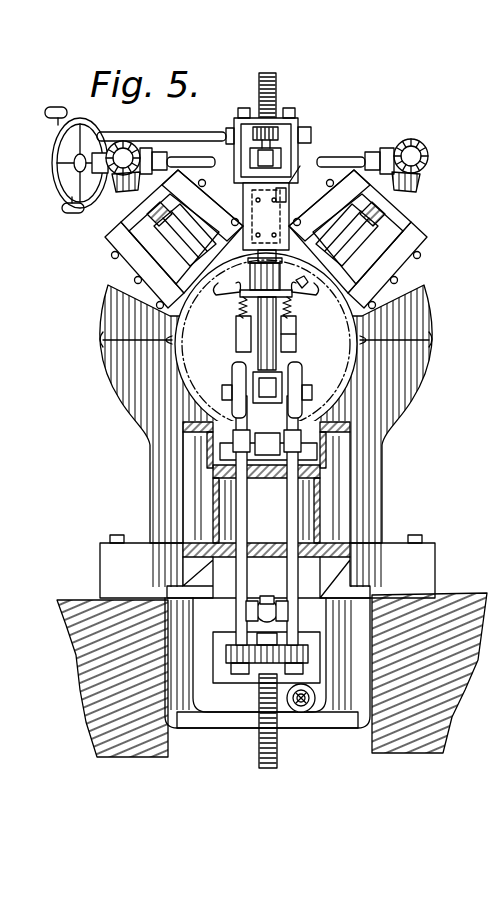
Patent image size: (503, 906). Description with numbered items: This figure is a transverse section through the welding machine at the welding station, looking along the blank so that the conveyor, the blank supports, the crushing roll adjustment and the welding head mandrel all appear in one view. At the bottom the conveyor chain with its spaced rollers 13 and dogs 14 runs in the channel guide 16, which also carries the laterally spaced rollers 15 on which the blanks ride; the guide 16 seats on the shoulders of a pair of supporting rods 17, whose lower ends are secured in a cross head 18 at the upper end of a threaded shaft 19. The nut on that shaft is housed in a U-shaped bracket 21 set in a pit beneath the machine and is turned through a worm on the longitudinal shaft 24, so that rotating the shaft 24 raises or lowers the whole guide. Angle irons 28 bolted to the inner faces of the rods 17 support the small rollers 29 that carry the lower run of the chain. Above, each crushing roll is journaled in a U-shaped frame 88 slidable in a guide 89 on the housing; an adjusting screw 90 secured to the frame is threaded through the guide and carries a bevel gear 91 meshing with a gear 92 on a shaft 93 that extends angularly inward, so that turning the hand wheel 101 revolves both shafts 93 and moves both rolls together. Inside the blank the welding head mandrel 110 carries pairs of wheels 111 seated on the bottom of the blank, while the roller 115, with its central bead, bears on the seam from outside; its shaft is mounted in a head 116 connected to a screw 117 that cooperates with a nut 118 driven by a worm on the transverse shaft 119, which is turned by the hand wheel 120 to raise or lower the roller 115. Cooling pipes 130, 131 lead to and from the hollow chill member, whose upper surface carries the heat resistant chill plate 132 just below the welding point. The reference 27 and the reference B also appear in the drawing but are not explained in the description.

The rollers 13 is at (267, 433).
The dogs 14 is at (282, 628).
The rollers 15 is at (348, 432).
The channel guide 16 is at (318, 450).
The supporting rods 17 is at (286, 524).
The cross head 18 is at (248, 602).
The threaded shaft 19 is at (268, 770).
The U-shaped bracket 21 is at (330, 722).
The shaft 24 is at (302, 714).
The lever arm 27 is at (214, 289).
The angle irons 28 is at (250, 612).
The small rollers 29 is at (318, 590).
The U-shaped frame 88 is at (108, 245).
The guide 89 is at (118, 270).
The adjusting screw 90 is at (266, 239).
The bevel gear 91 is at (105, 205).
The gear 92 is at (130, 141).
The shaft 93 is at (198, 157).
The hand wheel 101 is at (55, 180).
The welding head mandrel 110 is at (256, 356).
The wheels 111 is at (232, 378).
The roller 115 is at (300, 185).
The head 116 is at (282, 190).
The screw 117 is at (278, 92).
The nut 118 is at (253, 128).
The shaft 119 is at (177, 136).
The hand wheel 120 is at (64, 111).
The pipe 130 is at (248, 340).
The pipe 131 is at (298, 340).
The plate 132 is at (299, 285).
The block B is at (298, 360).